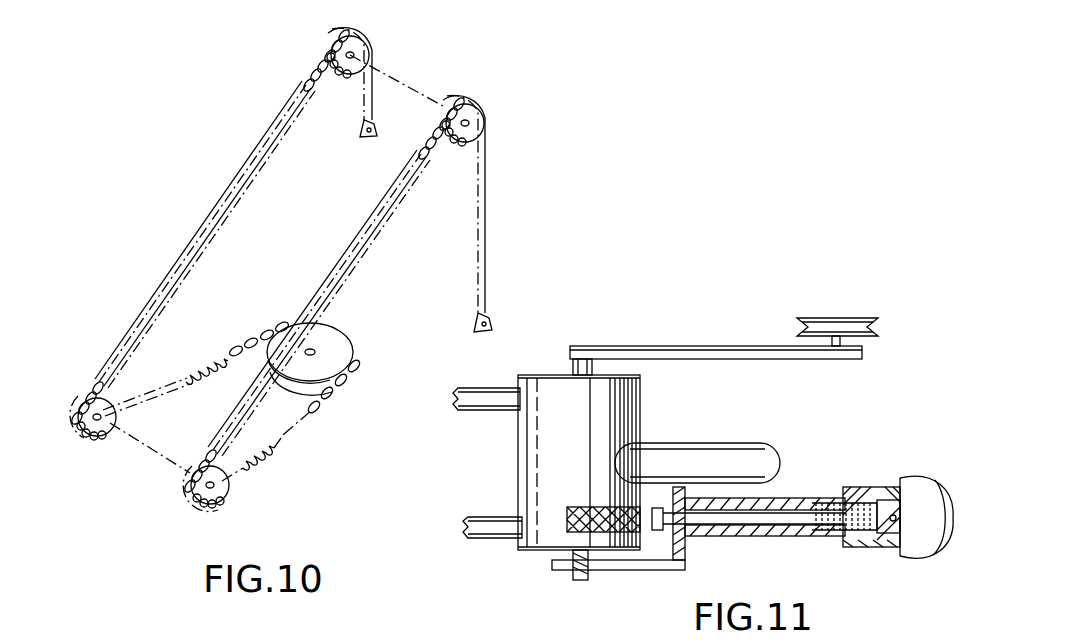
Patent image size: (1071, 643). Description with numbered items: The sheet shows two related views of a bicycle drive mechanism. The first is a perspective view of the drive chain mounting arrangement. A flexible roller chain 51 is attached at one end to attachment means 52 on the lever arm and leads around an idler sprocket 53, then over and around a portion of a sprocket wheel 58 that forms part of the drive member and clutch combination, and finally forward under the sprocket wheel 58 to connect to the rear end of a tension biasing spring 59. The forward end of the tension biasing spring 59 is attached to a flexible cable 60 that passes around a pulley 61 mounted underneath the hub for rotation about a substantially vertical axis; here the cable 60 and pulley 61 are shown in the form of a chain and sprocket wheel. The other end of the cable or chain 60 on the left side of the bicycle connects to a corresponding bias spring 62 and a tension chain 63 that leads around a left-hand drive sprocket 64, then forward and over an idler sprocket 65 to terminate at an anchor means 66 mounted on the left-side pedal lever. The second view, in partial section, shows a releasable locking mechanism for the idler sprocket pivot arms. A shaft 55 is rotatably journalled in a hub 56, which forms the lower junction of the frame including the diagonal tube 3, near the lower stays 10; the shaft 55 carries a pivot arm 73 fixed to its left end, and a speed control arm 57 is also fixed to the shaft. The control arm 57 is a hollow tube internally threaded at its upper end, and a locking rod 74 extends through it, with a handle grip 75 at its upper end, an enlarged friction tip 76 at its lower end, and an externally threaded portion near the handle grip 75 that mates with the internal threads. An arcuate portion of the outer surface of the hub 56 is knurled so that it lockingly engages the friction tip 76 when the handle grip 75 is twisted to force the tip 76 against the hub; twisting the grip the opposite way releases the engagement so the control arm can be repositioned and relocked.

In FIG. 11, the diagonal tube 3 is at (732, 458).
In FIG. 11, the lower stays 10 is at (495, 400).
In FIG. 10, the flexible roller chain 51 is at (486, 204).
In FIG. 10, the attachment means 52 is at (492, 321).
In FIG. 10, the idler sprocket 53 is at (456, 146).
In FIG. 11, the shaft 55 is at (577, 578).
In FIG. 11, the hub 56 is at (634, 403).
In FIG. 11, the speed control arm 57 is at (799, 501).
In FIG. 10, the sprocket wheel 58 is at (196, 481).
In FIG. 10, the tension biasing spring 59 is at (271, 456).
In FIG. 10, the flexible cable 60 is at (331, 400).
In FIG. 10, the pulley 61 is at (346, 358).
In FIG. 10, the bias spring 62 is at (204, 366).
In FIG. 10, the tension chain 63 is at (302, 70).
In FIG. 10, the left-hand drive sprocket 64 is at (91, 433).
In FIG. 10, the idler sprocket 65 is at (346, 76).
In FIG. 11, the idler sprocket 65 is at (841, 326).
In FIG. 10, the anchor means 66 is at (358, 132).
In FIG. 11, the pivot arm 73 is at (709, 338).
In FIG. 11, the locking rod 74 is at (740, 526).
In FIG. 11, the handle grip 75 is at (918, 548).
In FIG. 11, the enlarged friction tip 76 is at (656, 532).